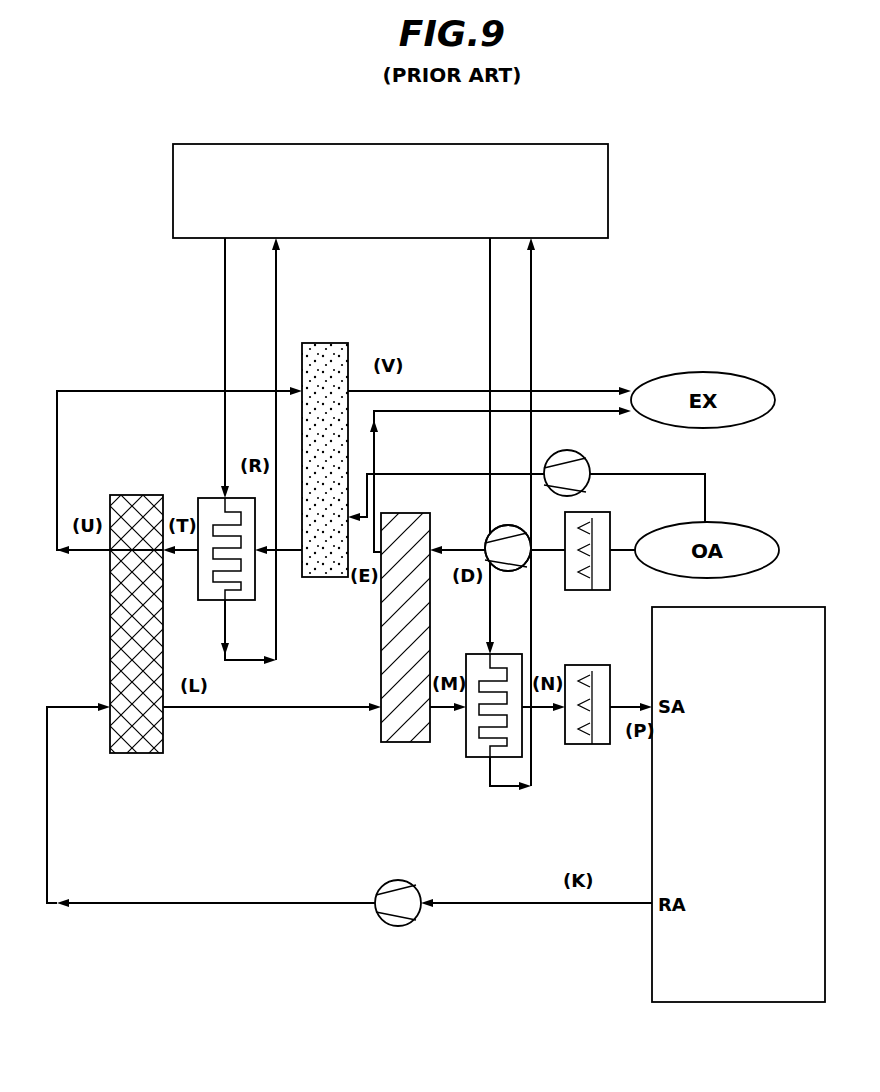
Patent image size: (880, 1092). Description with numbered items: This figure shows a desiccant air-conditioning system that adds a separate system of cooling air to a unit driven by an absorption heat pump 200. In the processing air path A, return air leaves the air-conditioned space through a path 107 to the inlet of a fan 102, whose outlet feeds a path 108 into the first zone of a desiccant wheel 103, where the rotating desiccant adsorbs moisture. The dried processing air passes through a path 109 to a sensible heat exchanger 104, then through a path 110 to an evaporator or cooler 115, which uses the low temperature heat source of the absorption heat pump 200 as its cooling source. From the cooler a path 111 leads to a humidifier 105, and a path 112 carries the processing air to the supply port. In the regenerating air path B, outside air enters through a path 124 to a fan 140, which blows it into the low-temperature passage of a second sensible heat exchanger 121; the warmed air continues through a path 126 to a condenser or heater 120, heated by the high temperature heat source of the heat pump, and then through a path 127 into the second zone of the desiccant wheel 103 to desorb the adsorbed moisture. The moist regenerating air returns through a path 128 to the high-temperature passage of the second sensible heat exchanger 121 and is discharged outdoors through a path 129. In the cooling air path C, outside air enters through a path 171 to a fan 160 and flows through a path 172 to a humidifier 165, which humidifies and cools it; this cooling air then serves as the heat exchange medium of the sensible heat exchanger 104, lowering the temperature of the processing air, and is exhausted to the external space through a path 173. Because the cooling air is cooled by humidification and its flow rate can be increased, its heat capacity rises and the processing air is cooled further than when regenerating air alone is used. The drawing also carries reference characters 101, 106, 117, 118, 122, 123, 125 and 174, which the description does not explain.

The absorption heat pump 200 is at (232, 144).
The room / conditioned space 101 is at (780, 608).
The fan 102 is at (390, 881).
The desiccant wheel 103 is at (110, 608).
The sensible heat exchanger 104 is at (380, 722).
The humidifier 105 is at (582, 665).
The water supply line 106 is at (577, 762).
The path 107 is at (507, 908).
The path 108 is at (135, 908).
The path 109 is at (228, 712).
The path 110 is at (444, 712).
The path 111 is at (543, 712).
The path 112 is at (614, 702).
The evaporator (cooler) 115 is at (486, 654).
The refrigerant line from heat pump 117 is at (490, 335).
The refrigerant return line 118 is at (531, 372).
The condenser (heater) 120 is at (214, 498).
The second sensible heat exchanger 121 is at (320, 343).
The heating medium supply line 122 is at (225, 355).
The heating medium return line 123 is at (278, 272).
The path 124 is at (640, 472).
The outdoor air branch duct 125 is at (466, 474).
The path 126 is at (284, 556).
The path 127 is at (172, 554).
The path 128 is at (57, 430).
The path 129 is at (456, 391).
The fan 140 is at (578, 452).
The fan 160 is at (505, 572).
The humidifier 165 is at (592, 592).
The path 171 is at (627, 549).
The path 172 is at (548, 558).
The path 173 is at (484, 540).
The bypass exhaust duct 174 is at (372, 462).
The processing air path A is at (295, 908).
The regenerating air path B is at (707, 496).
The cooling air path C is at (613, 556).